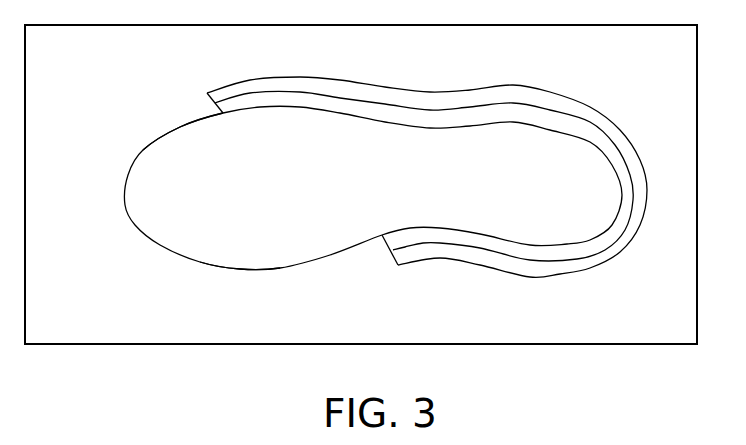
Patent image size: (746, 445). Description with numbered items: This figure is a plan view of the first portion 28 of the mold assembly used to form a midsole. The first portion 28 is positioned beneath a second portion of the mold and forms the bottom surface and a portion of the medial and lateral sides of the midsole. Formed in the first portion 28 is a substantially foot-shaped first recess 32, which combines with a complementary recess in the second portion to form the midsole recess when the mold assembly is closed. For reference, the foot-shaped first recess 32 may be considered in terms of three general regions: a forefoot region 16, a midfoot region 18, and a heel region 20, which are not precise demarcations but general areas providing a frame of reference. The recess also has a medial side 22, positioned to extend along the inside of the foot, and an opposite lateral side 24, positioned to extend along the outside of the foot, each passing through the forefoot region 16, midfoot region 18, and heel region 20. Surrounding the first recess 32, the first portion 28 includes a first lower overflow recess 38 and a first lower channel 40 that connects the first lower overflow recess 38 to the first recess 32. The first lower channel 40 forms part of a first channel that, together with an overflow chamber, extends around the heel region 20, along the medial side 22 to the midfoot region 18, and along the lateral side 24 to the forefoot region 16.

The forefoot region 16 is at (173, 200).
The midfoot region 18 is at (399, 199).
The heel region 20 is at (594, 197).
The medial side 22 is at (227, 268).
The lateral side 24 is at (182, 128).
The first portion 28 is at (427, 186).
The first recess 32 is at (299, 166).
The first lower overflow recess 38 is at (572, 267).
The first lower channel 40 is at (530, 248).